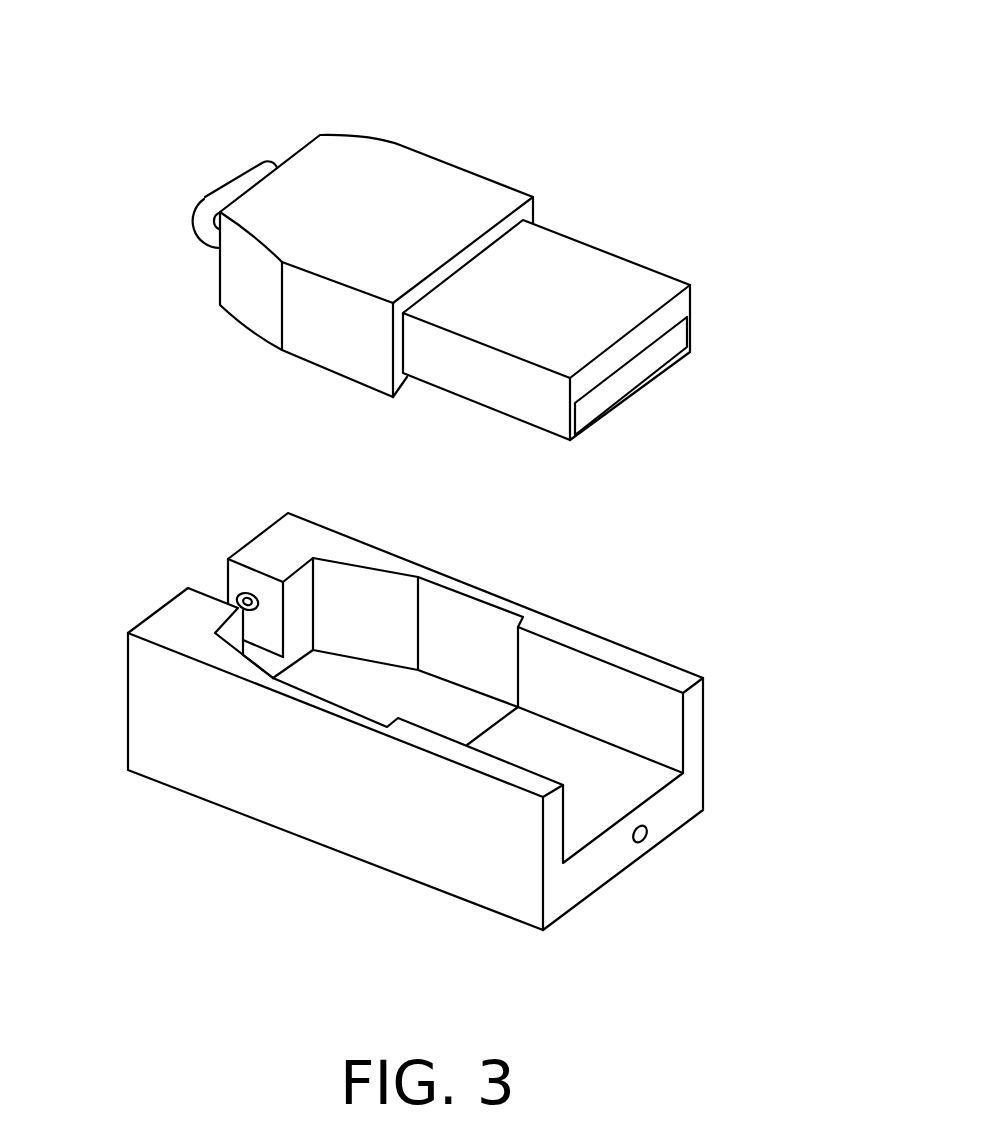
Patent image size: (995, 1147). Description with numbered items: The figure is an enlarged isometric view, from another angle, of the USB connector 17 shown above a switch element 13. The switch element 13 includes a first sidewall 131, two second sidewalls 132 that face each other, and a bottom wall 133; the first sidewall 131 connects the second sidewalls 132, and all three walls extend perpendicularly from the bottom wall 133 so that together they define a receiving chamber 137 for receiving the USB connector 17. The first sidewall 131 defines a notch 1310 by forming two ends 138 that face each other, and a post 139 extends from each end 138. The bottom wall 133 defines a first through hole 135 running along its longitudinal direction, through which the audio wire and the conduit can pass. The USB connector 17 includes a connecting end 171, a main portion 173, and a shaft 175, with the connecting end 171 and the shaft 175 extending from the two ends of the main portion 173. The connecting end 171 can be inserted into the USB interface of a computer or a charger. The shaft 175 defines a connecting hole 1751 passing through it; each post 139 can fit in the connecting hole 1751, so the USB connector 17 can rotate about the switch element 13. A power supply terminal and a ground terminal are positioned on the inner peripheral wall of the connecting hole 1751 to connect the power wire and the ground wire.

The USB connector 17 is at (683, 177).
The connecting end 171 is at (553, 267).
The main portion 173 is at (398, 192).
The shaft 175 is at (250, 170).
The connecting hole 1751 is at (197, 230).
The switch element 13 is at (278, 842).
The first sidewall 131 is at (271, 528).
The second sidewall 132 is at (445, 843).
The bottom wall 133 is at (598, 868).
The first through hole 135 is at (647, 838).
The receiving chamber 137 is at (593, 760).
The end 138 is at (237, 573).
The post 139 is at (237, 595).
The notch 1310 is at (270, 628).